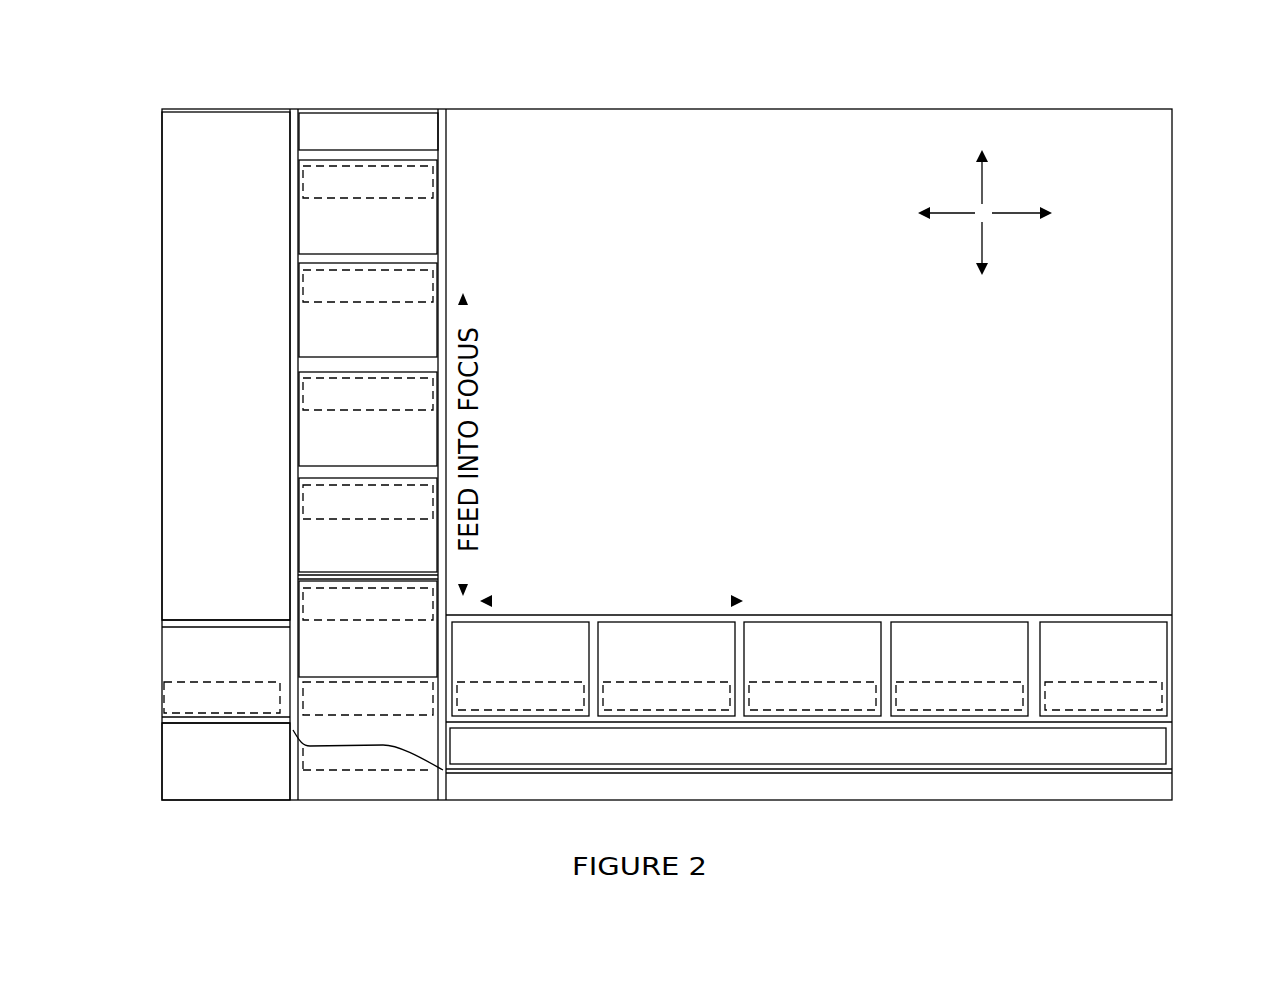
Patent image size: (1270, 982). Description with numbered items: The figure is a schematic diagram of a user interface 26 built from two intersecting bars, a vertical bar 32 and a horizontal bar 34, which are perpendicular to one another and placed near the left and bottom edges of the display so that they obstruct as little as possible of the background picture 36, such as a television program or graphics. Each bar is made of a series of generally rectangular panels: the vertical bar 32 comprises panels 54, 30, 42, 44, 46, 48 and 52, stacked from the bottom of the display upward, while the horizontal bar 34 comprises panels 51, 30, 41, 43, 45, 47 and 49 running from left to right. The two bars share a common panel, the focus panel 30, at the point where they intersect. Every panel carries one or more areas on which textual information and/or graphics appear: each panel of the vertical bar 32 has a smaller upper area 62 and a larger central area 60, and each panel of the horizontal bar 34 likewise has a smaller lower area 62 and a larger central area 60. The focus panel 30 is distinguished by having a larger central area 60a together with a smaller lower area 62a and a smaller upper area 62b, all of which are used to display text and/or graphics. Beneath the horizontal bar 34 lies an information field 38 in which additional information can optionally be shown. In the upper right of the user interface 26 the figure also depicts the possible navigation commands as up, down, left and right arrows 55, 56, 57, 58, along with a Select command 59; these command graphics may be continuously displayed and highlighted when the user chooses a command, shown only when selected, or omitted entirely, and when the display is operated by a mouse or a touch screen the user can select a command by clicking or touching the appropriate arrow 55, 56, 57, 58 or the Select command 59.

The user interface 26 is at (1098, 104).
The focus panel 30 is at (313, 615).
The vertical bar 32 is at (290, 137).
The horizontal bar 34 is at (1140, 612).
The background picture 36 is at (803, 212).
The information field 38 is at (852, 755).
The panel 41 is at (467, 620).
The panel 42 is at (298, 500).
The panel 43 is at (735, 618).
The panel 44 is at (298, 392).
The panel 45 is at (787, 620).
The panel 46 is at (298, 290).
The panel 47 is at (980, 622).
The panel 48 is at (298, 193).
The panel 49 is at (1092, 622).
The panel 51 is at (188, 627).
The panel 52 is at (443, 125).
The panel 54 is at (290, 787).
The up arrow 55 is at (980, 178).
The down arrow 56 is at (985, 247).
The left arrow 57 is at (942, 212).
The right arrow 58 is at (1015, 200).
The Select command 59 is at (1112, 229).
The central area 60 is at (440, 320).
The central area of focus panel 60a is at (420, 645).
The upper or lower area 62 is at (422, 283).
The lower area of focus panel 62a is at (317, 702).
The upper area of focus panel 62b is at (313, 606).